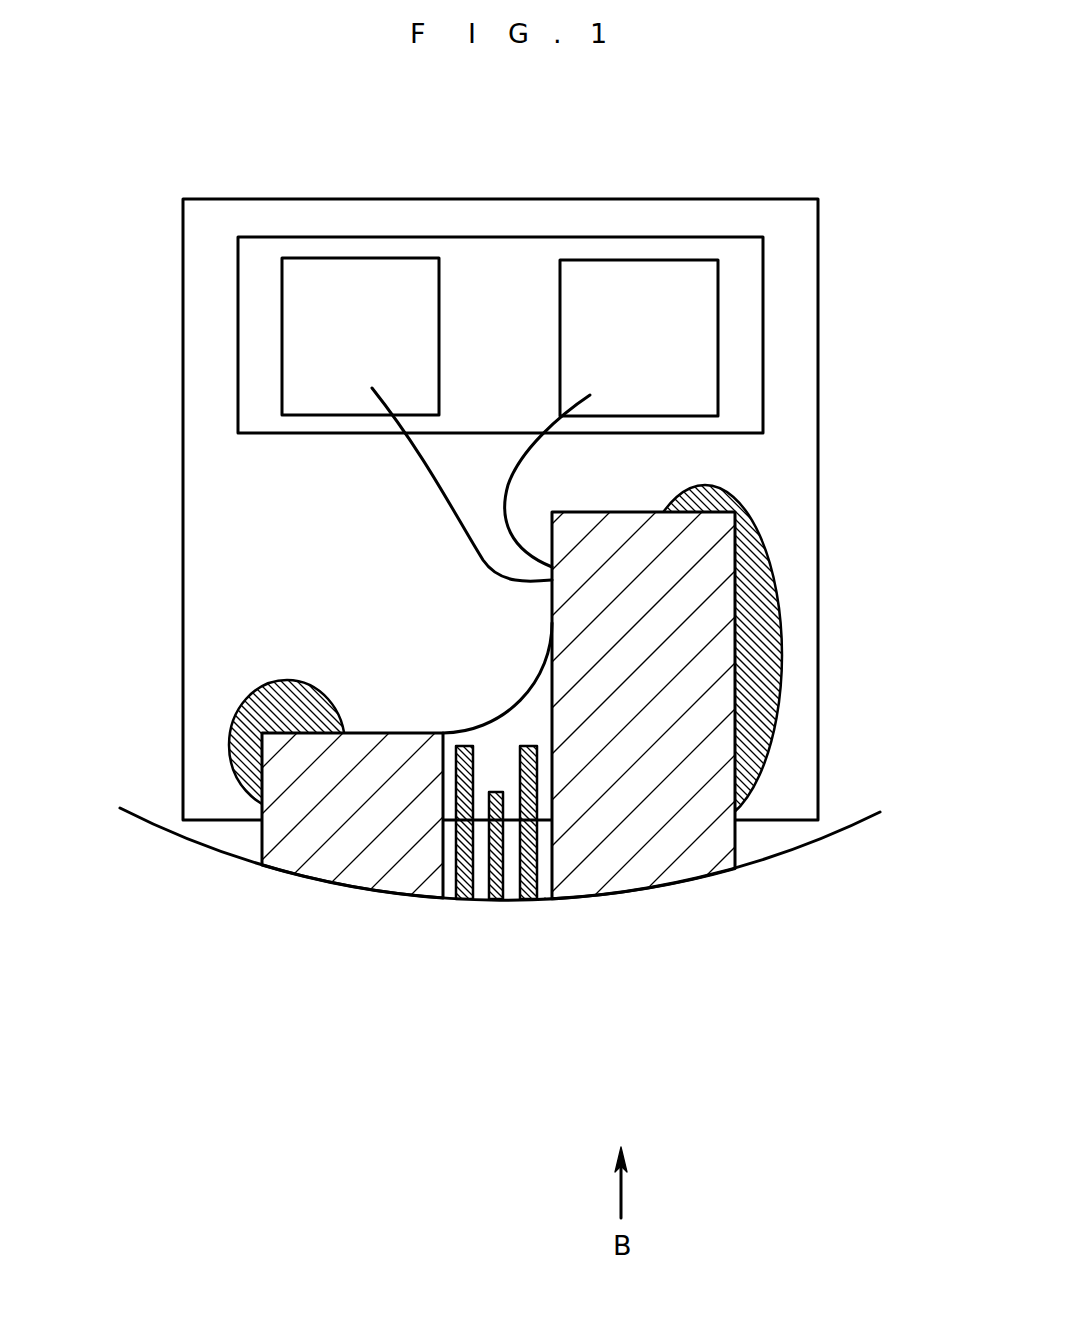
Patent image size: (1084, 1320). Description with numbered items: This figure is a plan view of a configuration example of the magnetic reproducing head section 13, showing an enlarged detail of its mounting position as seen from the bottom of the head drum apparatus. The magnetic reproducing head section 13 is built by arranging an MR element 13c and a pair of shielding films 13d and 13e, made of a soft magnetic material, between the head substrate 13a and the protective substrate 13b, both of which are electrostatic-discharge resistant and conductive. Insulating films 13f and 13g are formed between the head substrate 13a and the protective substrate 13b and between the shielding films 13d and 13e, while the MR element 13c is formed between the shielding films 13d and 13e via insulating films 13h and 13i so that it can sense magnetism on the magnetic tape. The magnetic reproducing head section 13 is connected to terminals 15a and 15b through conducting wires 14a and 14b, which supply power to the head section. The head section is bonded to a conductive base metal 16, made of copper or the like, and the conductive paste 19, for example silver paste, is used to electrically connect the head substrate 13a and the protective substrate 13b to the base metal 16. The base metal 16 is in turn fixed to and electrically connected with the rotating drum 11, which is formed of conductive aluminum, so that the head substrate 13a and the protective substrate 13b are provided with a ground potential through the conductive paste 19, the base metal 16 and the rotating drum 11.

The rotating drum 11 is at (145, 822).
The magnetic reproducing head section 13 is at (607, 805).
The head substrate 13a is at (683, 887).
The protective substrate 13b is at (310, 870).
The MR element 13c is at (493, 902).
The shielding film 13d is at (530, 902).
The shielding film 13e is at (463, 900).
The insulating film 13f is at (546, 900).
The insulating film 13g is at (448, 900).
The insulating film 13h is at (515, 902).
The insulating film 13i is at (477, 905).
The conducting wire 14a is at (437, 500).
The conducting wire 14b is at (513, 470).
The terminal 15a is at (347, 258).
The terminal 15b is at (630, 260).
The base metal 16 is at (752, 199).
The conductive paste 19 is at (287, 680).